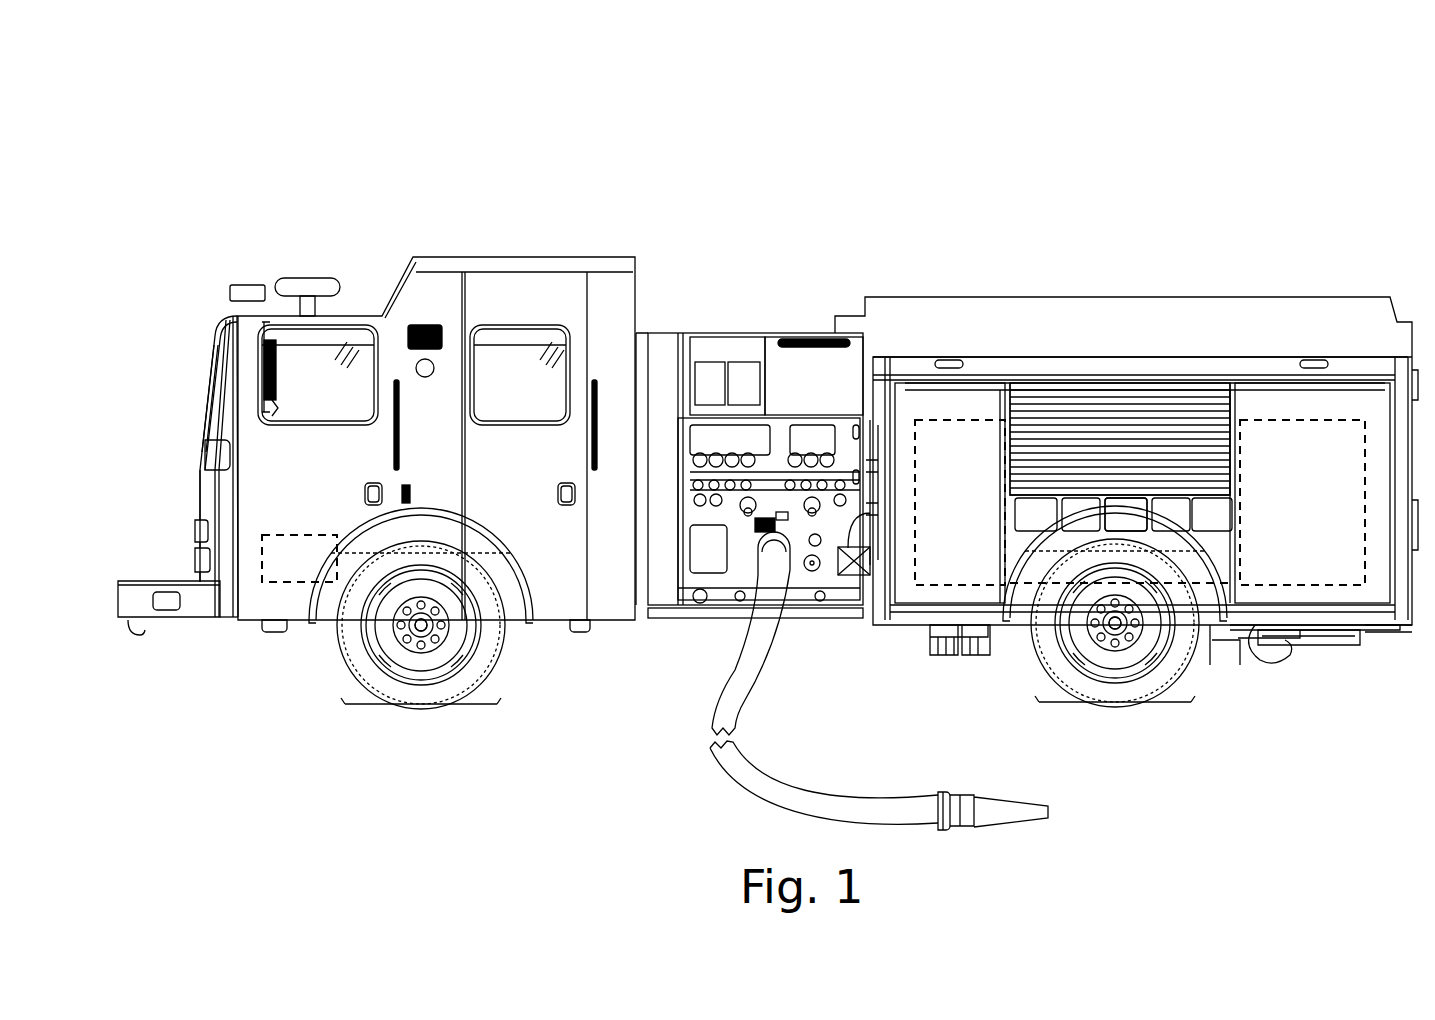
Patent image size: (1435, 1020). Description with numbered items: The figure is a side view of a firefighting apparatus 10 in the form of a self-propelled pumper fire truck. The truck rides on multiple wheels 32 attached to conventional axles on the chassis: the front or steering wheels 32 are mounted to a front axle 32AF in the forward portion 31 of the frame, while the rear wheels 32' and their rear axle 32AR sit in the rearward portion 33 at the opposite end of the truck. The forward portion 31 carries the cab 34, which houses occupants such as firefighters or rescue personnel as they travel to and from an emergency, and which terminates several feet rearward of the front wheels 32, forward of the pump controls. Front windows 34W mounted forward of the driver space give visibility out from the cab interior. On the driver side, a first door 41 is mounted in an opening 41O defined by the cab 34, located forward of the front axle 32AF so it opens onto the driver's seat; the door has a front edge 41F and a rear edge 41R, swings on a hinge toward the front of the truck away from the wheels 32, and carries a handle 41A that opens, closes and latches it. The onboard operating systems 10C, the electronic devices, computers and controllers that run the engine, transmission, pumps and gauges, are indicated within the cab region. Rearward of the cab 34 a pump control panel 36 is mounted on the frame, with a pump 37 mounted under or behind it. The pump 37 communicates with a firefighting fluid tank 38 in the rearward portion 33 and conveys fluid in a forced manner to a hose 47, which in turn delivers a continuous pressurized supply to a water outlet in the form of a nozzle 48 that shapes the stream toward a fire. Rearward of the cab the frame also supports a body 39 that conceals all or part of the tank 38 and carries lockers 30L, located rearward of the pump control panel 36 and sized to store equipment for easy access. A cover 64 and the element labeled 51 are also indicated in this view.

The firefighting apparatus 10 is at (265, 158).
The onboard operating systems 10C is at (285, 535).
The lockers 30L is at (1225, 398).
The forward portion 31 is at (612, 246).
The wheels 32 is at (428, 634).
The rear wheels 32' is at (1115, 633).
The front axle 32AF is at (421, 632).
The rear axle 32AR is at (1112, 630).
The rearward portion 33 is at (724, 285).
The cab 34 is at (228, 318).
The front windows 34W is at (215, 362).
The pump control panel 36 is at (820, 576).
The pump 37 is at (880, 560).
The firefighting fluid tank 38 is at (1332, 645).
The body 39 is at (1000, 297).
The first door 41 is at (255, 508).
The handle 41A is at (365, 495).
The front edge 41F is at (245, 413).
The opening 41O is at (230, 461).
The rear edge 41R is at (390, 374).
The hose 47 is at (742, 700).
The nozzle 48 is at (1008, 825).
The window 51 is at (300, 452).
The cover 64 is at (1118, 515).